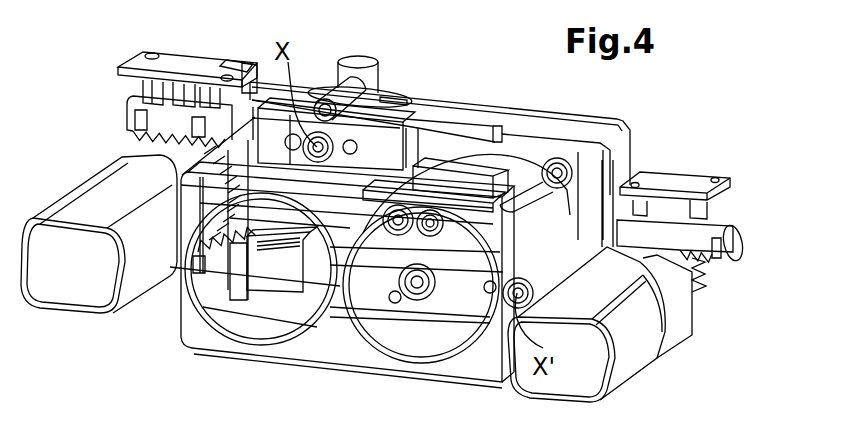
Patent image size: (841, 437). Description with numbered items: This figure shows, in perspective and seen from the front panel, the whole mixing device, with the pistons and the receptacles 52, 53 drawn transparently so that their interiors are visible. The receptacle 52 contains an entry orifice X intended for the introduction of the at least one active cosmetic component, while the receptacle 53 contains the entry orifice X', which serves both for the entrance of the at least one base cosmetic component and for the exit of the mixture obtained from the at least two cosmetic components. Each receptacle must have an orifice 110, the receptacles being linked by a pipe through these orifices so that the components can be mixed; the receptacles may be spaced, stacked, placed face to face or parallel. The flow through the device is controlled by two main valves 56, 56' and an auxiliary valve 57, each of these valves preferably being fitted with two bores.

The receptacle 52 is at (267, 317).
The receptacle 53 is at (453, 333).
The main valve 56 is at (151, 146).
The main valve 56' is at (192, 289).
The auxiliary valve 57 is at (677, 233).
The orifice 110 is at (430, 223).